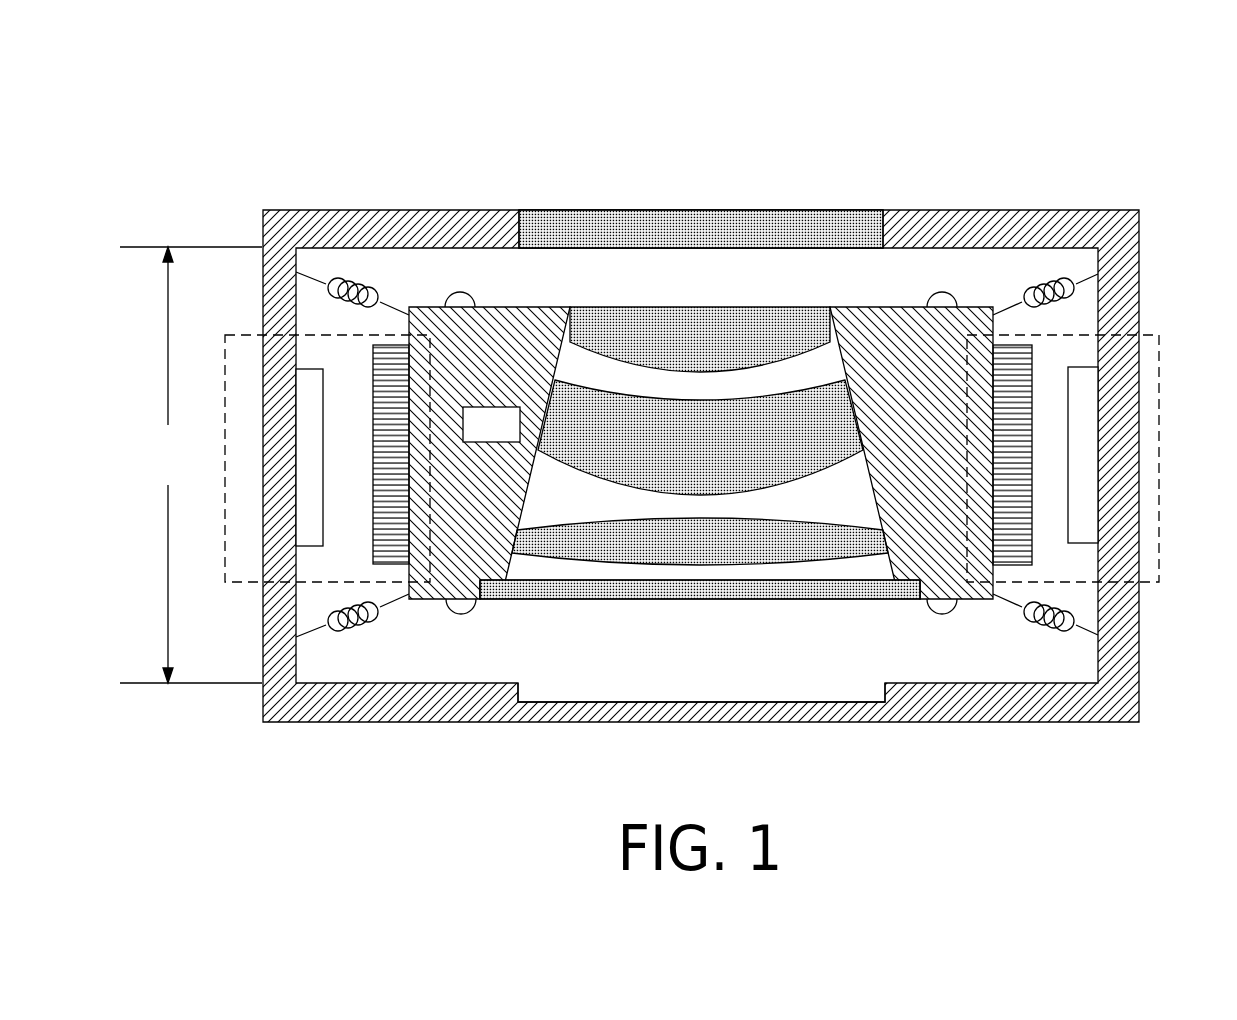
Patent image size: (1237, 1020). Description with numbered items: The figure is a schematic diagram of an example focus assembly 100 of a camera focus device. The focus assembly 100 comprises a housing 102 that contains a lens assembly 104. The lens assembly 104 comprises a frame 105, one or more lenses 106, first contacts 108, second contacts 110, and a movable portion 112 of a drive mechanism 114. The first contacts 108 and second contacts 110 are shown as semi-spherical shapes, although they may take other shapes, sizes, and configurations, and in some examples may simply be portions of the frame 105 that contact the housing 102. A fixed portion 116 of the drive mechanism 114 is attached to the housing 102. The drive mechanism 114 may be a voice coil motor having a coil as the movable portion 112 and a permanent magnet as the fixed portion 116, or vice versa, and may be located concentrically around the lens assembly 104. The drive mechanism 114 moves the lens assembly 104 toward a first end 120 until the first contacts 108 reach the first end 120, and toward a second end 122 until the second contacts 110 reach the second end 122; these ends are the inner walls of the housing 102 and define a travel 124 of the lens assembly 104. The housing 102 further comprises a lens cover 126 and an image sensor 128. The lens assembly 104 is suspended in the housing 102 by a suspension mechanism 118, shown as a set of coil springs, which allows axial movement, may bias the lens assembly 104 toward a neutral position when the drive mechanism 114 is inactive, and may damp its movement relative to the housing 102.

The focus assembly 100 is at (1128, 103).
The housing 102 is at (347, 209).
The lens assembly 104 is at (535, 306).
The frame 105 is at (491, 424).
The lenses 106 is at (680, 305).
The first contacts 108 is at (458, 294).
The second contacts 110 is at (468, 614).
The movable portion 112 is at (368, 515).
The drive mechanism 114 is at (225, 540).
The fixed portion 116 is at (323, 393).
The suspension mechanism 118 is at (350, 290).
The first end 120 is at (908, 250).
The second end 122 is at (928, 683).
The travel 124 is at (191, 465).
The lens cover 126 is at (820, 209).
The image sensor 128 is at (700, 682).